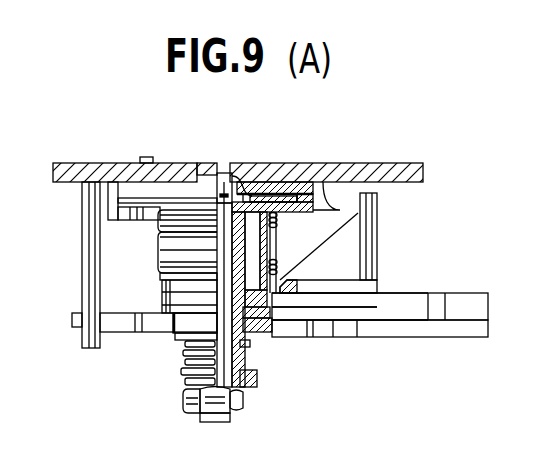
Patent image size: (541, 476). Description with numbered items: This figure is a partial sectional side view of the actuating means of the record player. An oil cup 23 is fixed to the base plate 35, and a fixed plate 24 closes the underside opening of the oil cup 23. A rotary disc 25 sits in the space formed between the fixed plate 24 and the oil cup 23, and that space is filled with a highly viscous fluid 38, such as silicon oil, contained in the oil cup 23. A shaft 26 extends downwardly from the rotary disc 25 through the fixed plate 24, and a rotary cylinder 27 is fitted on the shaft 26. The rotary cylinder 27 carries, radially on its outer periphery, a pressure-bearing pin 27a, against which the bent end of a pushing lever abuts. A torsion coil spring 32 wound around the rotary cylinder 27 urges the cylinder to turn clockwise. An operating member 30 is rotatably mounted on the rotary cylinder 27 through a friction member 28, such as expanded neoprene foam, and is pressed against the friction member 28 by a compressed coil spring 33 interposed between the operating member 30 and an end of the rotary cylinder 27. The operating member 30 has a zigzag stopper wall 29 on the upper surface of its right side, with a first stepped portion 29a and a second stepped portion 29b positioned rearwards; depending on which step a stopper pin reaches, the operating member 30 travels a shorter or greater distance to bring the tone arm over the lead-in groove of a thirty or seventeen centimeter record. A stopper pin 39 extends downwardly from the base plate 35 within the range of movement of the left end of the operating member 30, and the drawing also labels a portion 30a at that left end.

The base plate 35 is at (90, 163).
The rotary disc 25 is at (250, 177).
The highly viscous fluid 38 is at (272, 190).
The oil cup 23 is at (311, 184).
The fixed plate 24 is at (330, 190).
The torsion coil spring 32 is at (158, 226).
The stopper pin 39 is at (82, 278).
The rotary cylinder 27 is at (186, 286).
The pressure-bearing pin 27a is at (378, 224).
The zigzag stopper wall 29 is at (429, 289).
The friction member 28 is at (186, 313).
The tab 30a is at (78, 332).
The compressed coil spring 33 is at (187, 358).
The shaft 26 is at (228, 363).
The first stepped portion 29a is at (383, 315).
The operating member 30 is at (401, 328).
The second stepped portion 29b is at (443, 312).